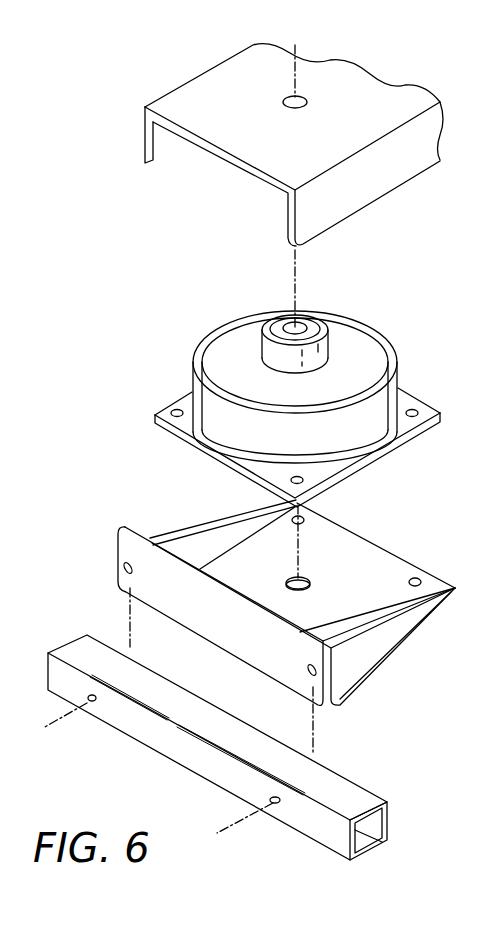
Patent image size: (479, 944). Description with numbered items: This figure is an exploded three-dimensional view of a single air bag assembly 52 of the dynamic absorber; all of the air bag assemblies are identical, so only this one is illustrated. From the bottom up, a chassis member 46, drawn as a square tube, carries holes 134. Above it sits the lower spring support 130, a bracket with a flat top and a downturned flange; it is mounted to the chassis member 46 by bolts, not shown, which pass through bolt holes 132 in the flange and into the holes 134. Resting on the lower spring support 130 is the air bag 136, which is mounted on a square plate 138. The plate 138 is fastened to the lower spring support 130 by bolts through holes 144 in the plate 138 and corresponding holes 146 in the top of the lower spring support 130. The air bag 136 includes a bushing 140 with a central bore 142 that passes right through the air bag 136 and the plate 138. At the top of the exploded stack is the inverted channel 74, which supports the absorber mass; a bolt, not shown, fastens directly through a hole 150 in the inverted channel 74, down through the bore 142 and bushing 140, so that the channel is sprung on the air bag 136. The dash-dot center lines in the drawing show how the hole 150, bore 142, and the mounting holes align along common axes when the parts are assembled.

The air bag assembly 52 is at (72, 332).
The inverted channel 74 is at (247, 131).
The hole 150 is at (290, 99).
The air bag 136 is at (197, 347).
The bushing 140 is at (273, 323).
The central bore 142 is at (293, 318).
The plate 138 is at (215, 457).
The holes 144 is at (413, 410).
The lower spring support 130 is at (388, 661).
The holes 146 is at (301, 516).
The bolt holes 132 is at (120, 578).
The chassis member 46 is at (240, 747).
The holes 134 is at (270, 801).